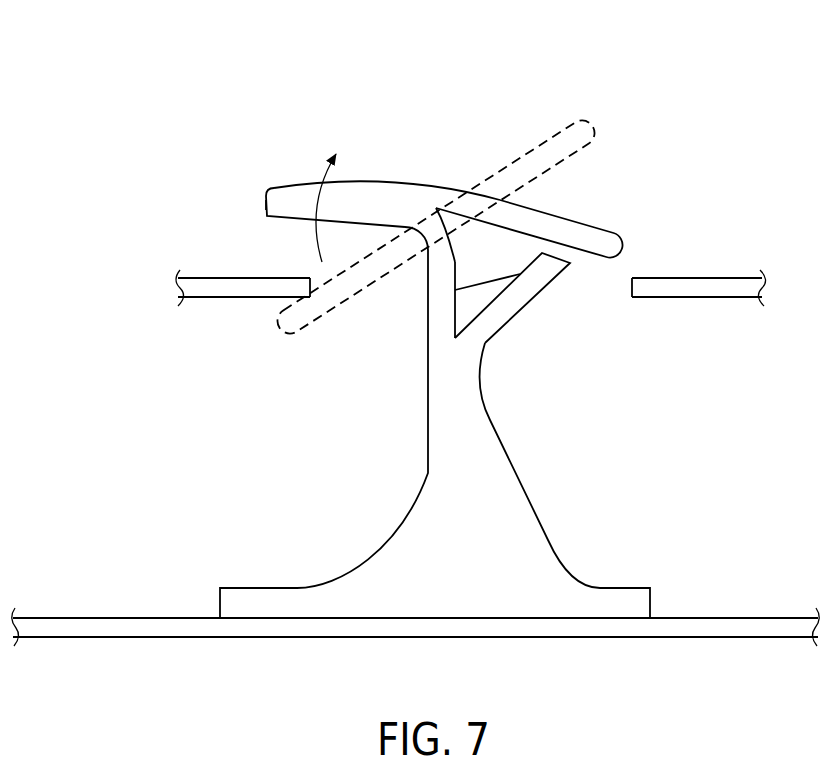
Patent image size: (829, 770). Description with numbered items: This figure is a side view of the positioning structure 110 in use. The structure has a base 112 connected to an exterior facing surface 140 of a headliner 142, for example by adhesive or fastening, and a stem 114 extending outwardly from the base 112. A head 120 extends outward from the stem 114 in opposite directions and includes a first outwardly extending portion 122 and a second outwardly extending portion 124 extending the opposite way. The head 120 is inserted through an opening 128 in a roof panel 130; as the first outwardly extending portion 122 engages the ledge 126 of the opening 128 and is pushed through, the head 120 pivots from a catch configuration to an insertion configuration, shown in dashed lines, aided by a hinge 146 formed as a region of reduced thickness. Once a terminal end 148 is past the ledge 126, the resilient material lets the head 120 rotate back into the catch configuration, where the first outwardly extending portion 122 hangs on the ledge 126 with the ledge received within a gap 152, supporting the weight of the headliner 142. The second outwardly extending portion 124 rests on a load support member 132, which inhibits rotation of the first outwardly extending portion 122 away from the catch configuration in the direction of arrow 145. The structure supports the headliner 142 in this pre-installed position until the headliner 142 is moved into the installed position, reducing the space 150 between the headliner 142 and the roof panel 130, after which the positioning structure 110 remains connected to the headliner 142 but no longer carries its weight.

The positioning structure 110 is at (671, 183).
The base 112 is at (617, 588).
The stem 114 is at (486, 418).
The head 120 is at (421, 163).
The first outwardly extending portion 122 is at (275, 163).
The second outwardly extending portion 124 is at (603, 207).
The ledge 126 is at (300, 278).
The opening 128 is at (629, 265).
The roof panel 130 is at (182, 278).
The load support member 132 is at (527, 303).
The exterior facing surface 140 is at (77, 618).
The headliner 142 is at (50, 637).
The arrow 145 is at (322, 174).
The hinge 146 is at (430, 256).
The terminal end 148 is at (266, 205).
The space 150 is at (416, 632).
The gap 152 is at (292, 565).